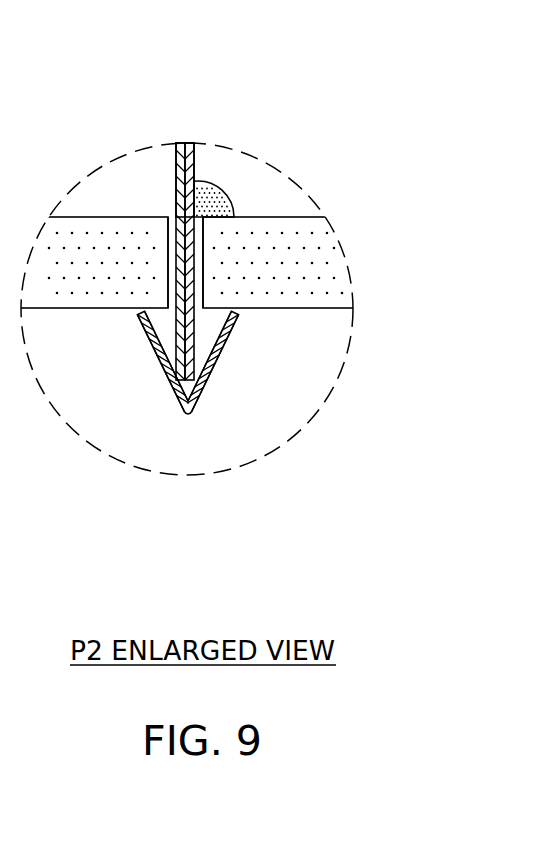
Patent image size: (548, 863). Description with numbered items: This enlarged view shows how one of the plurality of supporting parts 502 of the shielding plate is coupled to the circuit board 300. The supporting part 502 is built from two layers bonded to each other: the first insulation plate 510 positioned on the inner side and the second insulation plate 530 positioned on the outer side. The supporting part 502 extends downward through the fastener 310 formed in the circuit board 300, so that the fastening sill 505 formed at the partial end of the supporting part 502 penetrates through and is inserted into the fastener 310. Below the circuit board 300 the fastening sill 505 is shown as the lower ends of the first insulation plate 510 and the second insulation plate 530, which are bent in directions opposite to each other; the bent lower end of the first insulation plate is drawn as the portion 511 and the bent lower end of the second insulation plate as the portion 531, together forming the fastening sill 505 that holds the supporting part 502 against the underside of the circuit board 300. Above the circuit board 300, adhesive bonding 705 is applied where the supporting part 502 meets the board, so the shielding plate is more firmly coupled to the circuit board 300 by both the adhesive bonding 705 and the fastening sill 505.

The circuit board 300 is at (322, 254).
The fastener 310 is at (176, 208).
The adhesive bonding 705 is at (212, 198).
The supporting parts 502 is at (238, 55).
The first insulation plate 510 is at (176, 147).
The second insulation plate 530 is at (194, 147).
The fastening sill 505 is at (246, 548).
The first lower portion 511 is at (168, 381).
The second lower portion 531 is at (207, 381).